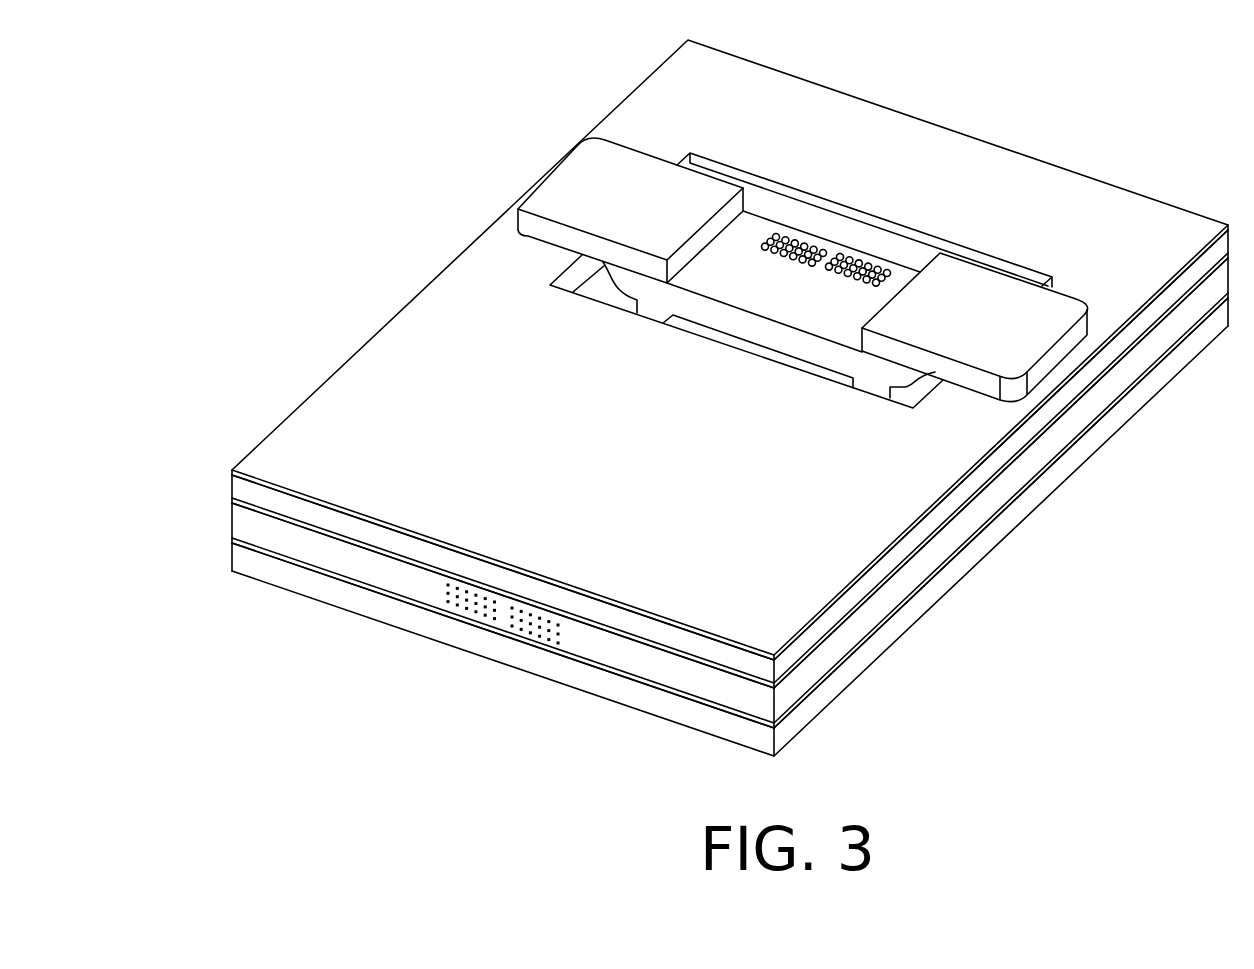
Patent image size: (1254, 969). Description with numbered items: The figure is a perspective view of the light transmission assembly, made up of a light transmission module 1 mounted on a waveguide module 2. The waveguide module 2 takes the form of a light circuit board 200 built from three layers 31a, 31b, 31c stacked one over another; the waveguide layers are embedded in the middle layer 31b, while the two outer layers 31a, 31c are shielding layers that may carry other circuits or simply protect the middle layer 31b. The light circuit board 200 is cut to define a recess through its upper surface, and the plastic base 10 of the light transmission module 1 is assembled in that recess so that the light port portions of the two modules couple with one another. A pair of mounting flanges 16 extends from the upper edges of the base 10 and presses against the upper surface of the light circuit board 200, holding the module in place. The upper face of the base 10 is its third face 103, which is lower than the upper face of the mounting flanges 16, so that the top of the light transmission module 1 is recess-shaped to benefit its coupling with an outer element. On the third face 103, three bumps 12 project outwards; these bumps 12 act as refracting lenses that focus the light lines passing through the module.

The light transmission module 1 is at (824, 319).
The waveguide module 2 is at (445, 593).
The base 10 is at (836, 352).
The bumps 12 is at (805, 243).
The mounting flanges 16 is at (1012, 340).
The third face 103 is at (898, 280).
The light circuit board 200 is at (782, 102).
The layer 31a is at (248, 484).
The layer 31b is at (248, 525).
The layer 31c is at (247, 557).